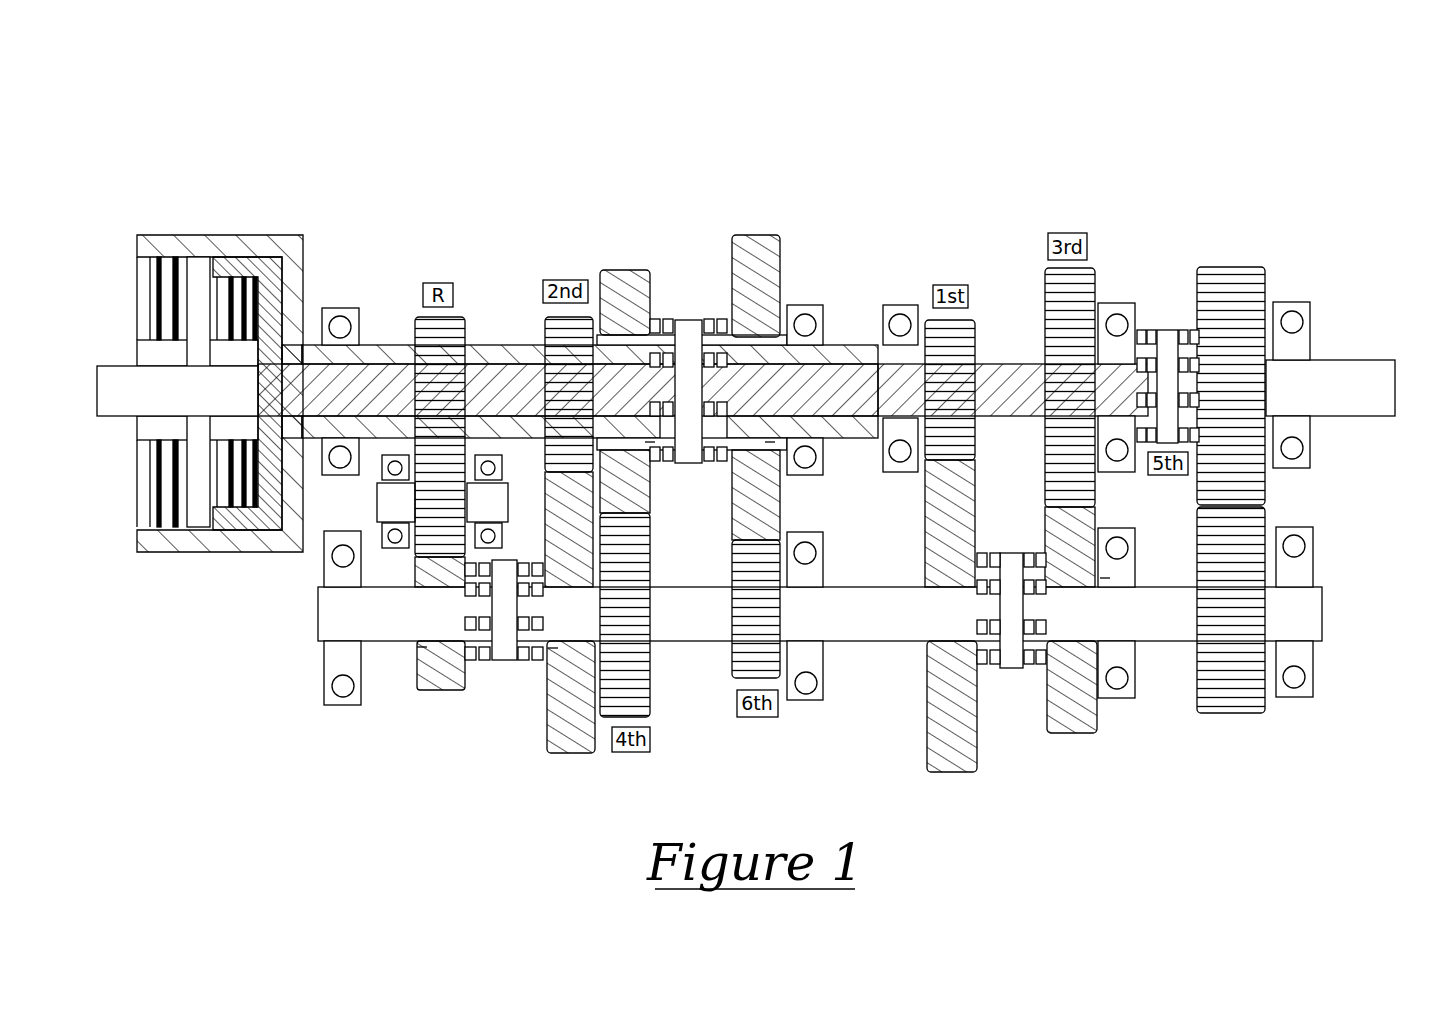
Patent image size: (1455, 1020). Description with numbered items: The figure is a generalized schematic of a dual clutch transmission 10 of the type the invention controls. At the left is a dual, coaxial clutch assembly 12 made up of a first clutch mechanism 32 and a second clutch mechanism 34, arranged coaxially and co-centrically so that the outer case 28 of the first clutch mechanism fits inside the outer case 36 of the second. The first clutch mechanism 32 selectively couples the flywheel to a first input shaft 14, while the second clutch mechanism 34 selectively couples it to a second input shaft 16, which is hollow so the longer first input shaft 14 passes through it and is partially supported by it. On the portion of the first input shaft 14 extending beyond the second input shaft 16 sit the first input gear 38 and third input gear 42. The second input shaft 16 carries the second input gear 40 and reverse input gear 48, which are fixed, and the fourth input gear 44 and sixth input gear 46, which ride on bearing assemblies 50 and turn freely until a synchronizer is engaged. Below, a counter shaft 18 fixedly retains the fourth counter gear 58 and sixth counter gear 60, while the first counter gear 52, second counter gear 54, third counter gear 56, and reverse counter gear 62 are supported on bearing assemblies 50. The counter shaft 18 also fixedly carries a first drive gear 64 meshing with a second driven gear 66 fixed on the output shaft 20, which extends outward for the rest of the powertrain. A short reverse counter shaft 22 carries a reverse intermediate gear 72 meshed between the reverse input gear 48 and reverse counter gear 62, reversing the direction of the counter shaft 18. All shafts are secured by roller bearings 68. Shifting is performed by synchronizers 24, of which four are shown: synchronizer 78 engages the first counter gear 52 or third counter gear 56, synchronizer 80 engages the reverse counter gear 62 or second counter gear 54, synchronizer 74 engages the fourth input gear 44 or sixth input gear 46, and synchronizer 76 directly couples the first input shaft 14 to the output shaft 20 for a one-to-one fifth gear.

The dual clutch transmission 10 is at (530, 204).
The dual, coaxial clutch assembly 12 is at (229, 356).
The first input shaft 14 is at (1015, 370).
The second input shaft 16 is at (360, 358).
The counter shaft 18 is at (325, 615).
The output shaft 20 is at (1385, 382).
The reverse counter shaft 22 is at (325, 525).
The synchronizers 24 is at (717, 343).
The outer case of the first clutch mechanism 28 is at (286, 298).
The first clutch mechanism 32 is at (250, 283).
The second clutch mechanism 34 is at (183, 265).
The outer case of the second clutch mechanism 36 is at (305, 262).
The first input gear 38 is at (968, 325).
The second input gear 40 is at (543, 320).
The third input gear 42 is at (1090, 285).
The fourth input gear 44 is at (640, 268).
The sixth input gear 46 is at (778, 240).
The reverse input gear 48 is at (467, 328).
The bearing assemblies 50 is at (427, 647).
The first counter gear 52 is at (935, 698).
The second counter gear 54 is at (590, 743).
The third counter gear 56 is at (1063, 725).
The fourth counter gear 58 is at (650, 692).
The sixth counter gear 60 is at (730, 660).
The reverse counter gear 62 is at (423, 683).
The first drive gear 64 is at (1203, 687).
The second driven gear 66 is at (1248, 283).
The bearing assembly 68 is at (825, 318).
The reverse intermediate gear 72 is at (427, 500).
The synchronizer 74 is at (688, 325).
The synchronizer 76 is at (1165, 345).
The synchronizer 78 is at (1012, 655).
The synchronizer 80 is at (503, 655).